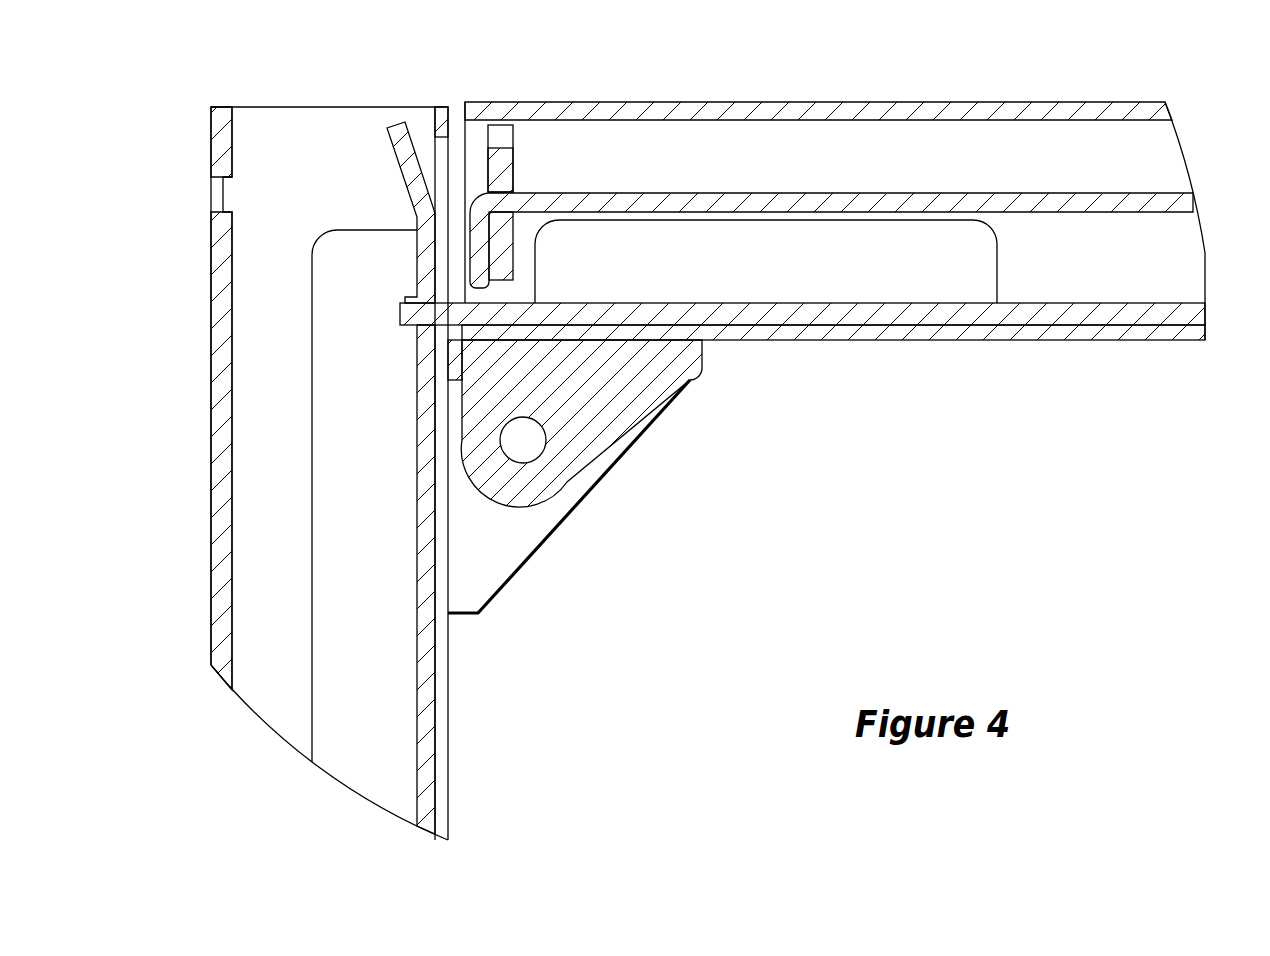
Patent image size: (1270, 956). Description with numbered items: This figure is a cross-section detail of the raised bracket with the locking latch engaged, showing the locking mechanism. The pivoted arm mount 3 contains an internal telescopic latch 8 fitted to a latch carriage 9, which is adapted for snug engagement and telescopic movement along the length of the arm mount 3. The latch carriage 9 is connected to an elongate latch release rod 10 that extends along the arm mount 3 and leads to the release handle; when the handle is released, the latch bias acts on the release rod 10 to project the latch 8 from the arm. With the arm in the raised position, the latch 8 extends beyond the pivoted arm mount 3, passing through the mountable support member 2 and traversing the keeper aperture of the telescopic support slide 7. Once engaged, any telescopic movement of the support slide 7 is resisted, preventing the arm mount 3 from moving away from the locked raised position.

The mountable support member 2 is at (210, 503).
The pivoted arm mount 3 is at (983, 98).
The telescopic support slide 7 is at (417, 610).
The telescopic latch 8 is at (406, 330).
The latch carriage 9 is at (765, 303).
The latch release rod 10 is at (1087, 210).